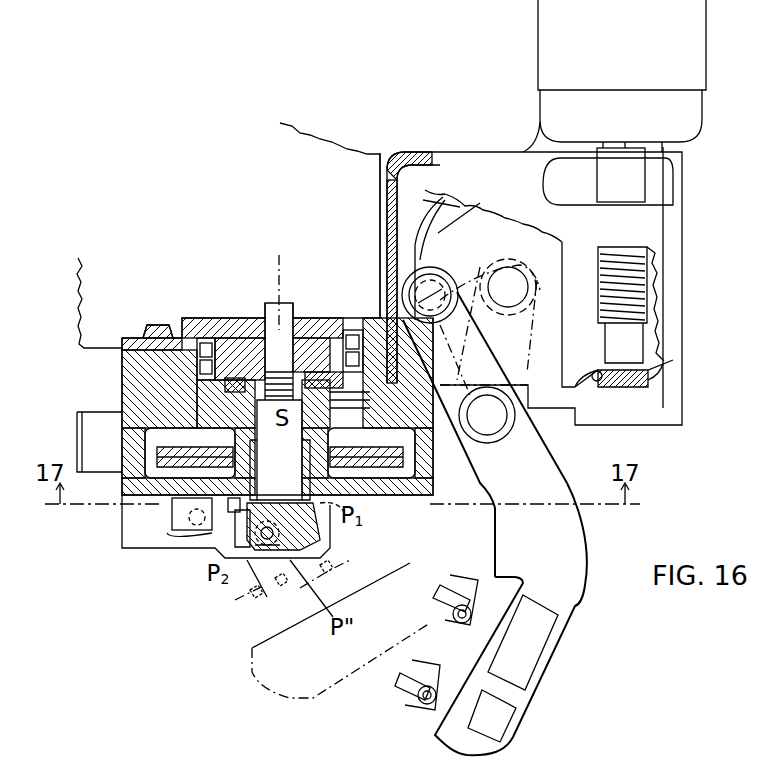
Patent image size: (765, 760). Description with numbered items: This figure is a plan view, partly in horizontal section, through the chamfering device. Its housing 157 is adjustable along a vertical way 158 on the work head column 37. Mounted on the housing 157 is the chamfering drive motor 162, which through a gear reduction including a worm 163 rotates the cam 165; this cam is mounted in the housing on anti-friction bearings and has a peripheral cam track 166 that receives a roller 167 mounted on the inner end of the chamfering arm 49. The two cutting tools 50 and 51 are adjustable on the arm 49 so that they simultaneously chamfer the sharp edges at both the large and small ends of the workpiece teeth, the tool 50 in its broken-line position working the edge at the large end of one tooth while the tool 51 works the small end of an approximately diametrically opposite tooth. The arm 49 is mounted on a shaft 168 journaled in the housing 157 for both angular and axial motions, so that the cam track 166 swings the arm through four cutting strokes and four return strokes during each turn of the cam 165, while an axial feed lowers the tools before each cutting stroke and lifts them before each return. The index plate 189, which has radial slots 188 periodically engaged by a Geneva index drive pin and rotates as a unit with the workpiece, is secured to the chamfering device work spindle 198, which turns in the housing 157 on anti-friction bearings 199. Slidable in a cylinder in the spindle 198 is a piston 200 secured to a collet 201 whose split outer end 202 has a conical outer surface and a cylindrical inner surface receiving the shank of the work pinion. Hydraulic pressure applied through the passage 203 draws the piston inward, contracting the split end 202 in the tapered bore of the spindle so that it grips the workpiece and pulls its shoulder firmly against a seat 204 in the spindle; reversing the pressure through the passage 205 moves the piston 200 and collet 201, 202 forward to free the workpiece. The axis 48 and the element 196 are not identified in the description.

The work head column 37 is at (103, 312).
The spindle shaft axis 48 is at (283, 270).
The chamfering arm 49 is at (536, 540).
The cutting tool 50 is at (433, 592).
The cutting tool 51 is at (270, 588).
The housing 157 is at (471, 190).
The vertical way 158 is at (145, 330).
The chamfering drive motor 162 is at (602, 46).
The worm 163 is at (640, 272).
The cam 165 is at (489, 249).
The peripheral cam track 166 is at (438, 228).
The roller 167 is at (440, 290).
The shaft 168 is at (502, 417).
The radial slots 188 is at (397, 455).
The index plate 189 is at (377, 460).
The left cavity with spring 196 is at (190, 451).
The work spindle 198 is at (181, 335).
The anti-friction bearings 199 is at (355, 330).
The piston 200 is at (313, 387).
The collet 201 is at (262, 326).
The split outer end 202 is at (280, 450).
The passage 203 is at (353, 408).
The seat 204 is at (371, 451).
The passage 205 is at (363, 390).